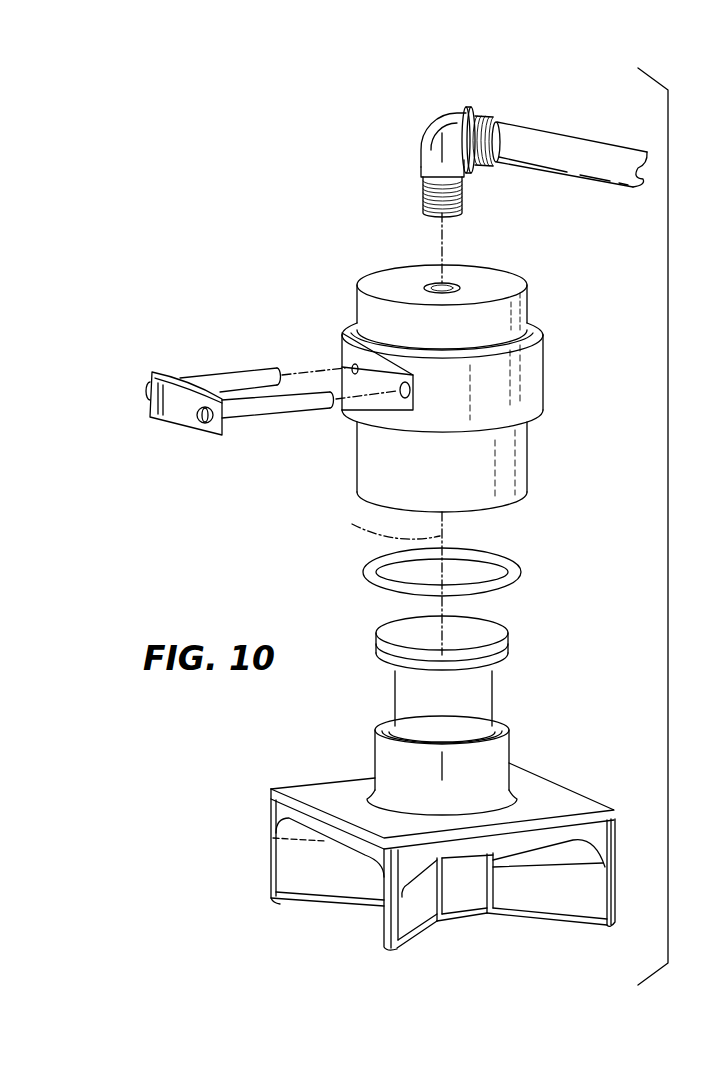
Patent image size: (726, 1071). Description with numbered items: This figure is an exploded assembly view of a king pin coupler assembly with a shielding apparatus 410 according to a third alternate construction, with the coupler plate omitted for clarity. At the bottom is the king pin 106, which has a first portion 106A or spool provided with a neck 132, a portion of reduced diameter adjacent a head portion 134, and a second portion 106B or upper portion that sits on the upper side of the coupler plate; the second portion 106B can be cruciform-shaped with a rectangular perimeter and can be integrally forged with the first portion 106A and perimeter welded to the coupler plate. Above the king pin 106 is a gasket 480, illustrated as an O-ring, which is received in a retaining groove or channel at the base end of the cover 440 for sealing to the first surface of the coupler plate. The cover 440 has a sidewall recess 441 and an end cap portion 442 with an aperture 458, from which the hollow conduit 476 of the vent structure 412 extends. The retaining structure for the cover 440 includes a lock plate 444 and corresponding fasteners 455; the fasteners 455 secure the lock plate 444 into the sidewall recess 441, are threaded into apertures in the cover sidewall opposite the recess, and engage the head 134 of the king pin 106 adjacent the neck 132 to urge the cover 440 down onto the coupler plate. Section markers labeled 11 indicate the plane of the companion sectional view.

The shielding apparatus 410 is at (668, 553).
The vent structure 412 is at (366, 190).
The hollow conduit 476 is at (458, 113).
The section line 11 is at (441, 149).
The end cap portion 442 is at (461, 274).
The aperture 458 is at (432, 284).
The cover 440 is at (447, 391).
The sidewall recess 441 is at (380, 383).
The lock plate 444 is at (185, 413).
The fasteners 455 is at (264, 407).
The gasket 480 is at (367, 573).
The head portion 134 is at (510, 642).
The neck 132 is at (492, 700).
The king pin 106 is at (208, 740).
The first portion 106A is at (375, 740).
The second portion 106B is at (303, 813).